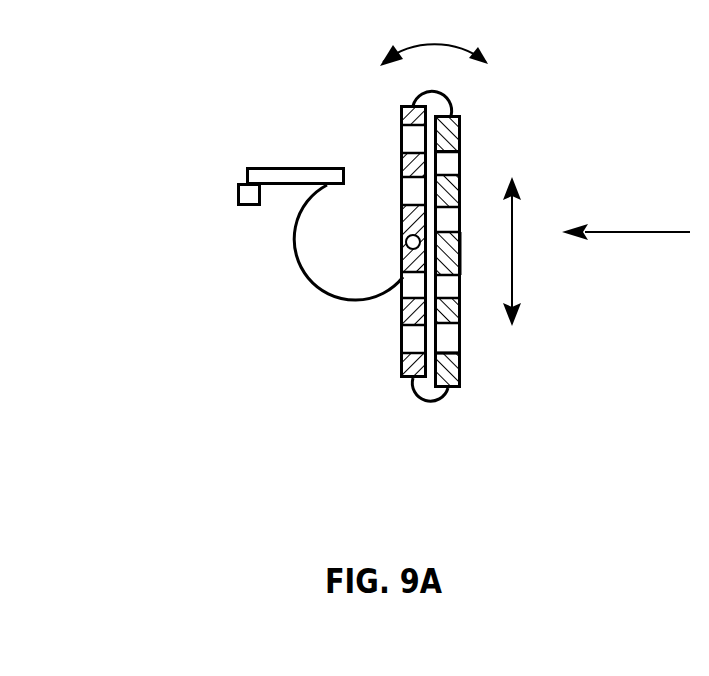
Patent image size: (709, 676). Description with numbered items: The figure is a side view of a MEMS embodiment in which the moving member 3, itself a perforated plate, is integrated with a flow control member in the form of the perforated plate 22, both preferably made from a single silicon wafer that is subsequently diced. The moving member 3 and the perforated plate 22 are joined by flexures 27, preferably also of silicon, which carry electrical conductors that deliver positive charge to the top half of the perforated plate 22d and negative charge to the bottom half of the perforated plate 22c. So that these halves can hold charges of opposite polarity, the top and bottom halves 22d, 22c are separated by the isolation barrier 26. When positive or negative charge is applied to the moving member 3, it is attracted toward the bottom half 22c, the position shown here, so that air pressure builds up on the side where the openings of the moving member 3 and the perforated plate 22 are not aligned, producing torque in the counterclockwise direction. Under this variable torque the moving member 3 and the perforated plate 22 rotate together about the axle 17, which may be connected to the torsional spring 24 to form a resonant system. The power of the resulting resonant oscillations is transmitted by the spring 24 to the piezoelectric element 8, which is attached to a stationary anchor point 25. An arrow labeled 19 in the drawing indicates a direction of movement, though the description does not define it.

The moving member 3 is at (400, 148).
The piezoelectric element 8 is at (247, 172).
The axle 17 is at (405, 243).
The direction of movement 19 is at (626, 217).
The perforated plate 22 is at (460, 307).
The bottom half of the perforated plate 22c is at (460, 378).
The top half of the perforated plate 22d is at (460, 124).
The torsional spring 24 is at (302, 250).
The stationary anchor point 25 is at (237, 190).
The isolation barrier 26 is at (460, 250).
The flexures 27 is at (418, 94).